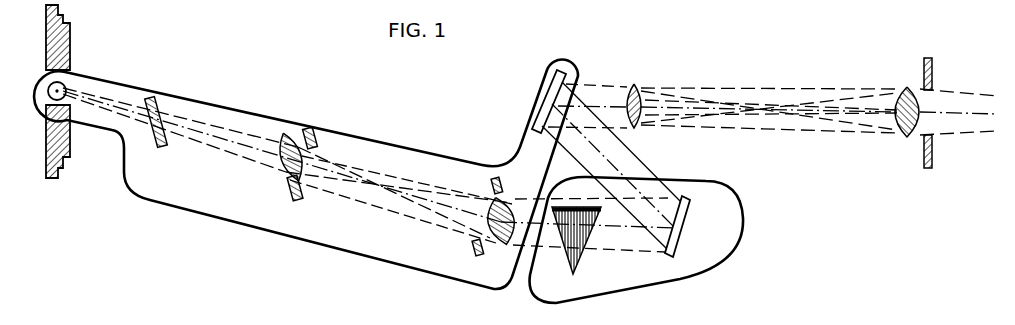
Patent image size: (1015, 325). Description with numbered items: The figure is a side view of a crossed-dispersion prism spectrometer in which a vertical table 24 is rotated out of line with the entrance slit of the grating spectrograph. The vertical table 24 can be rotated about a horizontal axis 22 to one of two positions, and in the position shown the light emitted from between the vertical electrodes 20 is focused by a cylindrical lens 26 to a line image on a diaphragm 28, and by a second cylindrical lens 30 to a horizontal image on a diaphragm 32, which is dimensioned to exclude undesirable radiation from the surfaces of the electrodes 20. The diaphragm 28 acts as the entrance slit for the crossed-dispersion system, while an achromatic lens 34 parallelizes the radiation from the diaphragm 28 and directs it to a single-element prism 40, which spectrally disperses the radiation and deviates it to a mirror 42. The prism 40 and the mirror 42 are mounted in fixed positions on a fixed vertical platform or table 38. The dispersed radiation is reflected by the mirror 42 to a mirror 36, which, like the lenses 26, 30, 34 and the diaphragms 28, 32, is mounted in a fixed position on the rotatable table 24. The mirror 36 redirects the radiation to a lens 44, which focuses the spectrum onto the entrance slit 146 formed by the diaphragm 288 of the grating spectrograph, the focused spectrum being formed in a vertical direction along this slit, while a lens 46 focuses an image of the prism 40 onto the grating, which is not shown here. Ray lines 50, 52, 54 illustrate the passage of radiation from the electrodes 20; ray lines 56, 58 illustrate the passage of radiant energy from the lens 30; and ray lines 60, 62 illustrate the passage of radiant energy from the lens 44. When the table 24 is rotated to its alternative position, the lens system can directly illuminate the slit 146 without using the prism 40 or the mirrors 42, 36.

The vertical electrodes 20 is at (67, 152).
The horizontal axis 22 is at (65, 88).
The vertical table 24 is at (238, 215).
The cylindrical lens 26 is at (163, 100).
The diaphragm 28 is at (317, 132).
The cylindrical lens 30 is at (297, 133).
The diaphragm 32 is at (475, 258).
The achromatic lens 34 is at (502, 247).
The mirror 36 is at (550, 107).
The fixed vertical platform or table 38 is at (565, 293).
The prism 40 is at (577, 275).
The mirror 42 is at (672, 258).
The lens 44 is at (637, 86).
The lens 46 is at (902, 88).
The ray line 50 is at (246, 158).
The ray line 52 is at (236, 142).
The ray line 54 is at (212, 126).
The ray line 56 is at (440, 222).
The ray line 58 is at (412, 182).
The ray line 60 is at (828, 90).
The ray line 62 is at (853, 132).
The entrance slit 146 is at (927, 120).
The diaphragm 288 is at (932, 67).